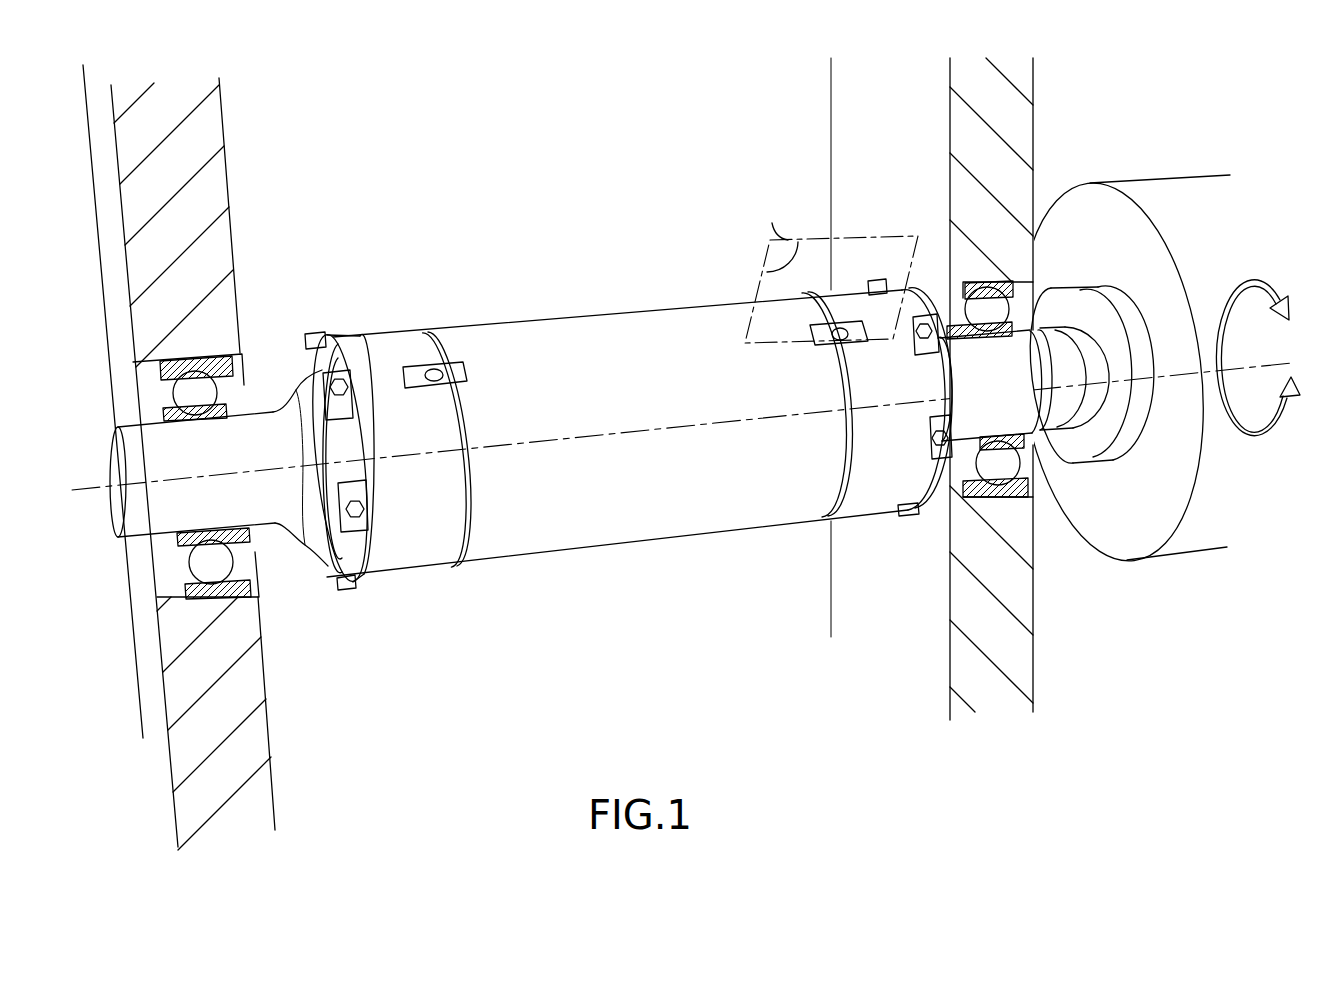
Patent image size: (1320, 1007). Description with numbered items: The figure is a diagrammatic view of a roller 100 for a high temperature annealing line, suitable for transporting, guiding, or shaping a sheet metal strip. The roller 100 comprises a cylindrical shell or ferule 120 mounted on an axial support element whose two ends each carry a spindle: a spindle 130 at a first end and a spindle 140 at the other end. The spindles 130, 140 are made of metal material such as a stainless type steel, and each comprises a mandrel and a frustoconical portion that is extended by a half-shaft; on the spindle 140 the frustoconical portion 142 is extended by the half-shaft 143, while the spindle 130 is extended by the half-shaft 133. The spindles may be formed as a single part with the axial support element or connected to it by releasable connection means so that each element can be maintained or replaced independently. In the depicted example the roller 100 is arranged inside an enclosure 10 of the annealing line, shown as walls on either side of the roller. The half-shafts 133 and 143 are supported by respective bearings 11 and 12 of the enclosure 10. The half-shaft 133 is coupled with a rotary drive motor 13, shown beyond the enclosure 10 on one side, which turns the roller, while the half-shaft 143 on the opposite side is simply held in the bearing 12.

The enclosure 10 is at (212, 181).
The bearing 11 is at (1018, 263).
The bearing 12 is at (115, 376).
The rotary drive motor 13 is at (1177, 194).
The roller 100 is at (610, 373).
The cylindrical shell or ferule 120 is at (572, 312).
The spindle 130 is at (928, 524).
The half-shaft 133 is at (1030, 452).
The spindle 140 is at (316, 582).
The frustoconical portion 142 is at (300, 396).
The half-shaft 143 is at (158, 512).